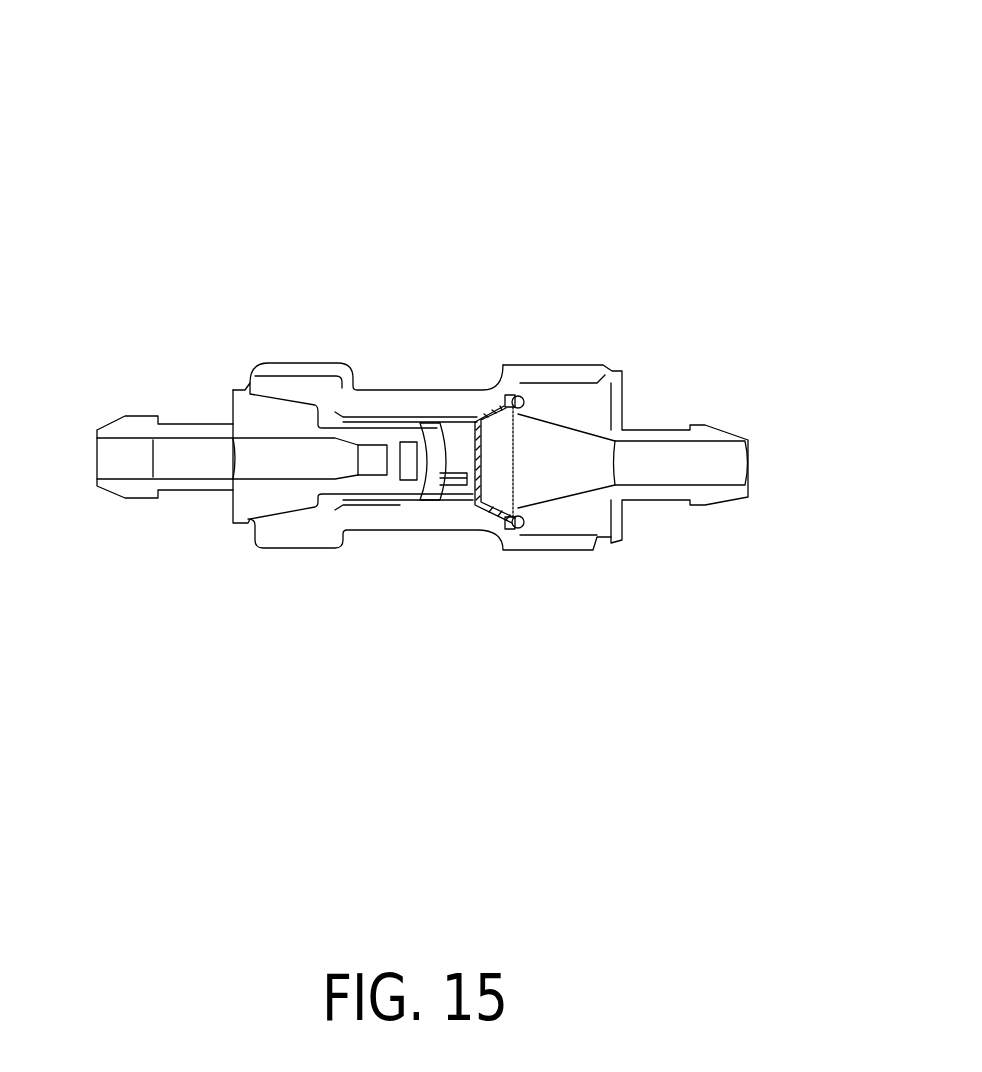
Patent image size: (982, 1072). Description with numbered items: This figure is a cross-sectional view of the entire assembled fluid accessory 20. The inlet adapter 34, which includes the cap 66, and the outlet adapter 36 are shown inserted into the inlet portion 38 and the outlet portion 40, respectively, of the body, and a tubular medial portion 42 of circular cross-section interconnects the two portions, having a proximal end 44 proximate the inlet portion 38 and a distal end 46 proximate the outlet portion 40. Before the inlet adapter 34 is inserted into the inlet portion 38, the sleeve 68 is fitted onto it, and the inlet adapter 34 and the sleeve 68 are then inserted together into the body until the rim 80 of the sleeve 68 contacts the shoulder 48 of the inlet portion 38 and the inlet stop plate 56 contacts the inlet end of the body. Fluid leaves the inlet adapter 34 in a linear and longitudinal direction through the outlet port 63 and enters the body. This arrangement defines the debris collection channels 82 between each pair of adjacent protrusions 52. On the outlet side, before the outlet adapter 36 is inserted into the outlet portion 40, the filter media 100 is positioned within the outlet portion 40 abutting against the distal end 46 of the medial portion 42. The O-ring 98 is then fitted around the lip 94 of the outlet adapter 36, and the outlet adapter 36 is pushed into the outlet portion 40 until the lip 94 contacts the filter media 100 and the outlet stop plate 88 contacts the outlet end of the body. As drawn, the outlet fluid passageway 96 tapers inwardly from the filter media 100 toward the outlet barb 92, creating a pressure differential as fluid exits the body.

The fluid accessory 20 is at (484, 190).
The inlet adapter 34 is at (140, 425).
The outlet adapter 36 is at (703, 430).
The inlet portion 38 is at (290, 372).
The outlet portion 40 is at (577, 372).
The medial portion 42 is at (403, 530).
The proximal end 44 is at (360, 507).
The distal end 46 is at (470, 488).
The shoulder 48 is at (345, 500).
The protrusions 52 is at (463, 420).
The inlet stop plate 56 is at (243, 383).
The outlet port 63 is at (373, 462).
The cap 66 is at (445, 485).
The sleeve 68 is at (433, 460).
The rim 80 is at (328, 497).
The debris collection channels 82 is at (476, 505).
The outlet stop plate 88 is at (616, 382).
The outlet barb 92 is at (707, 497).
The lip 94 is at (552, 386).
The outlet fluid passageway 96 is at (565, 465).
The O-ring 98 is at (516, 395).
The filter media 100 is at (504, 503).